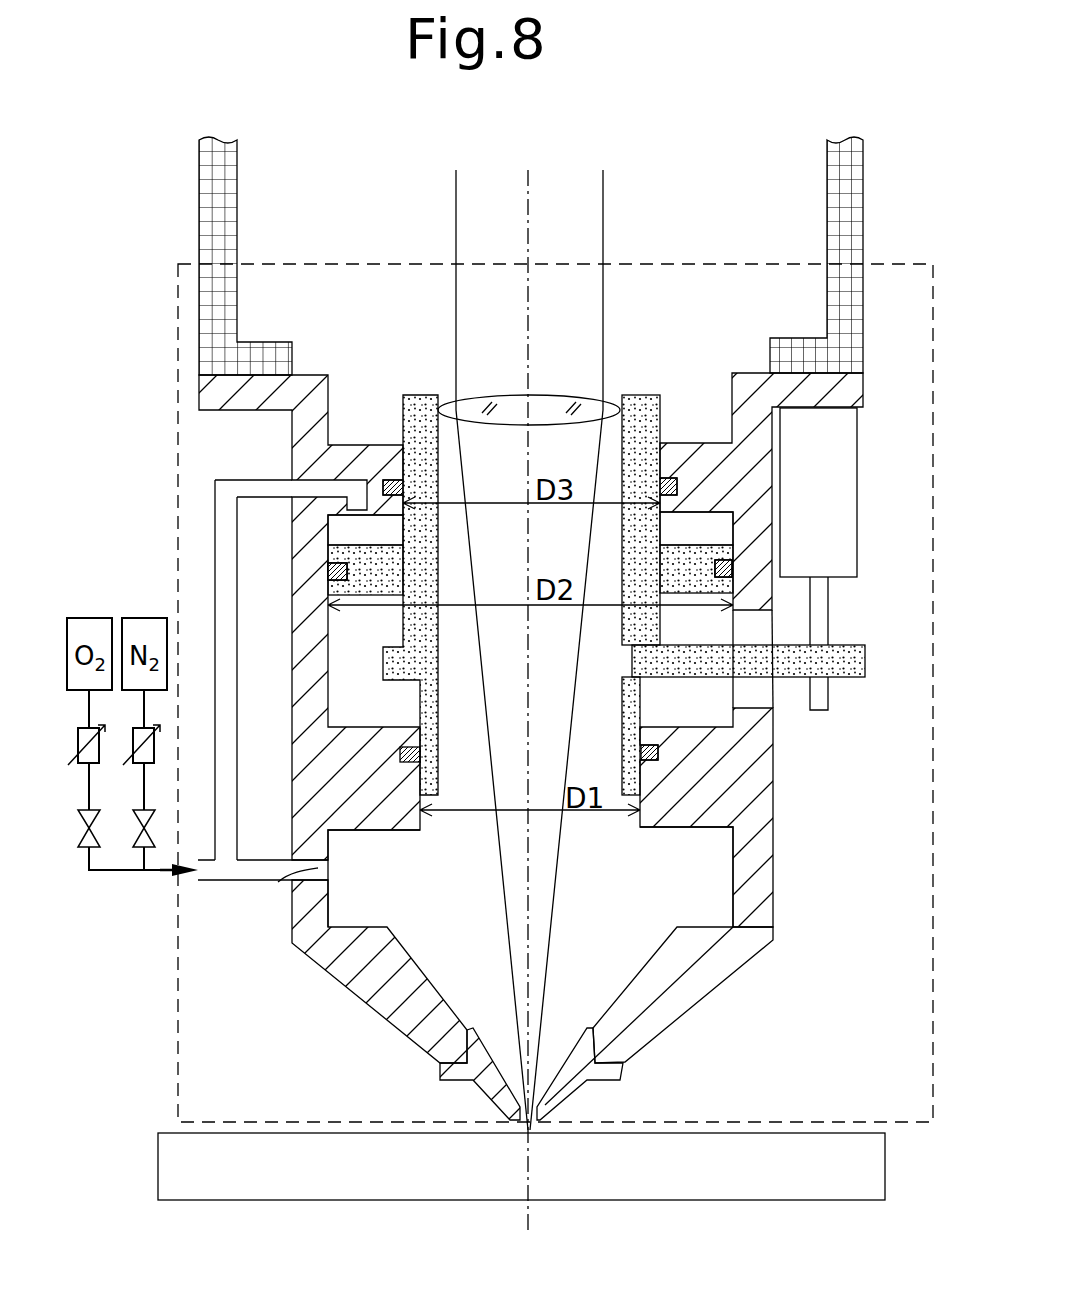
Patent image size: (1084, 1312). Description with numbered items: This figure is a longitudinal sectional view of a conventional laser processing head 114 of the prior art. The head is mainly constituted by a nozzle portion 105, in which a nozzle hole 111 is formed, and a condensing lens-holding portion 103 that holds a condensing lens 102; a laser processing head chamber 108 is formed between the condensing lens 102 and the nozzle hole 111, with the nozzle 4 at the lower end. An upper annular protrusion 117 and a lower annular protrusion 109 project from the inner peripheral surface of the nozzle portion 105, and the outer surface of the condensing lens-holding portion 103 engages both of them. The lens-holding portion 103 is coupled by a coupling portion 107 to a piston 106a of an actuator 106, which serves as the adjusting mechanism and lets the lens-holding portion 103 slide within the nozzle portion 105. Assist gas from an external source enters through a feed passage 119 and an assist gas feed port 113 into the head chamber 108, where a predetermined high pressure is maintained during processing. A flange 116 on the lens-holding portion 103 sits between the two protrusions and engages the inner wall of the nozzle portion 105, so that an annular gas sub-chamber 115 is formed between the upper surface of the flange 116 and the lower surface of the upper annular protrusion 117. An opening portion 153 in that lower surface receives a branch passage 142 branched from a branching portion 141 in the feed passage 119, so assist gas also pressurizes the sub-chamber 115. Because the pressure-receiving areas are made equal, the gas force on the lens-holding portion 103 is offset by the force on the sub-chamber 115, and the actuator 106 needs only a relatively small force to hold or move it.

The nozzle 4 is at (602, 1081).
The condensing lens 102 is at (562, 400).
The condensing lens-holding portion 103 is at (640, 403).
The nozzle portion 105 is at (756, 980).
The actuator 106 is at (835, 452).
The piston 106a is at (823, 600).
The coupling portion 107 is at (862, 660).
The laser processing head chamber 108 is at (640, 887).
The lower annular protrusion 109 is at (387, 805).
The nozzle hole 111 is at (520, 1133).
The assist gas feed port 113 is at (278, 882).
The laser processing head 114 is at (565, 256).
The annular gas sub-chamber 115 is at (398, 545).
The flange 116 is at (355, 590).
The upper annular protrusion 117 is at (372, 452).
The feed passage 119 is at (217, 883).
The branching portion 141 is at (250, 858).
The branch passage 142 is at (214, 482).
The opening portion 153 is at (358, 506).